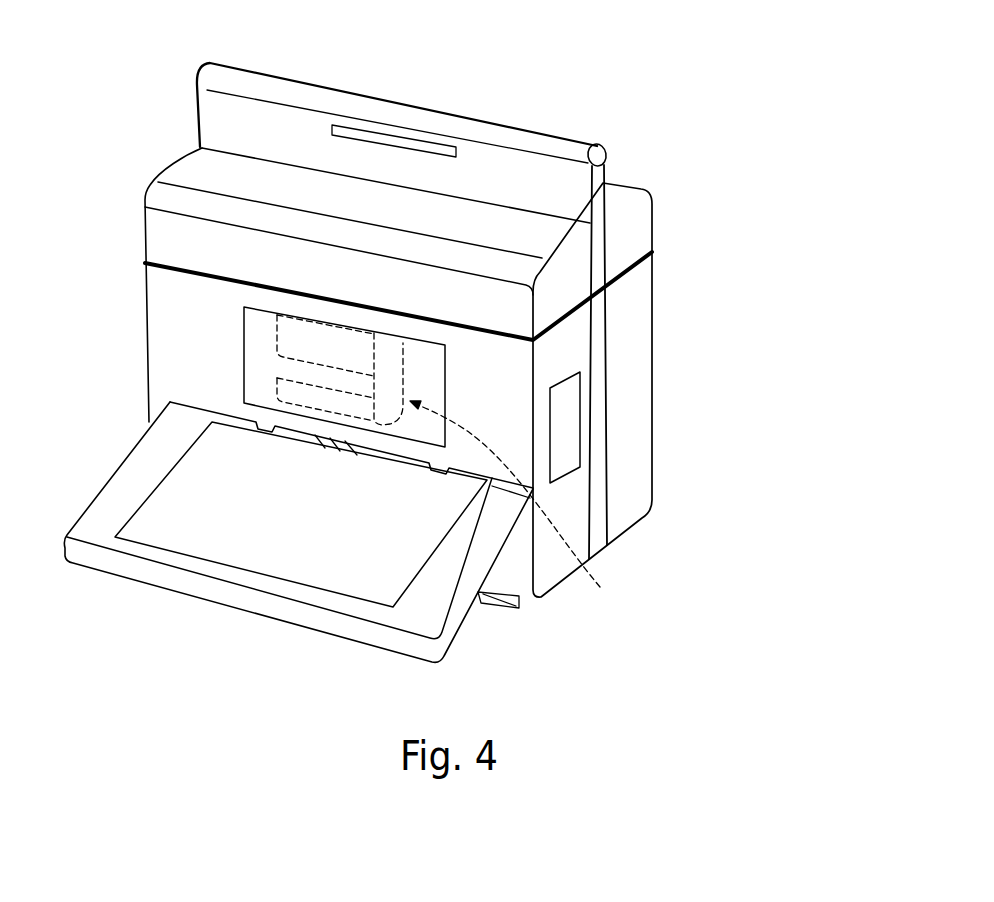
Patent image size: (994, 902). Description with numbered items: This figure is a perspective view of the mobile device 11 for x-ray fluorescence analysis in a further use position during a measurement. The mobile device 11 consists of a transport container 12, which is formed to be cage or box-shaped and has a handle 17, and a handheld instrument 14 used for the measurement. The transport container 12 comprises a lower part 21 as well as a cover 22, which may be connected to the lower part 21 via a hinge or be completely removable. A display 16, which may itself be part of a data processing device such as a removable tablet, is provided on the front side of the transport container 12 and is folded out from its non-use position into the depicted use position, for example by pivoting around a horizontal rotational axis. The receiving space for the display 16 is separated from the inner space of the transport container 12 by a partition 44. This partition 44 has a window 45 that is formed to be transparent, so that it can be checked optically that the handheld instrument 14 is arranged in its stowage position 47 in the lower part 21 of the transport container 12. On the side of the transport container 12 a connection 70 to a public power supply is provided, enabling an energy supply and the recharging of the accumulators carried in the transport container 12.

The mobile device 11 is at (439, 336).
The transport container 12 is at (446, 311).
The handheld instrument 14 is at (347, 353).
The display 16 is at (223, 543).
The handle 17 is at (385, 110).
The lower part 21 is at (637, 390).
The cover 22 is at (633, 170).
The partition 44 is at (356, 410).
The window 45 is at (243, 368).
The stowage position 47 is at (522, 506).
The connection 70 is at (568, 433).